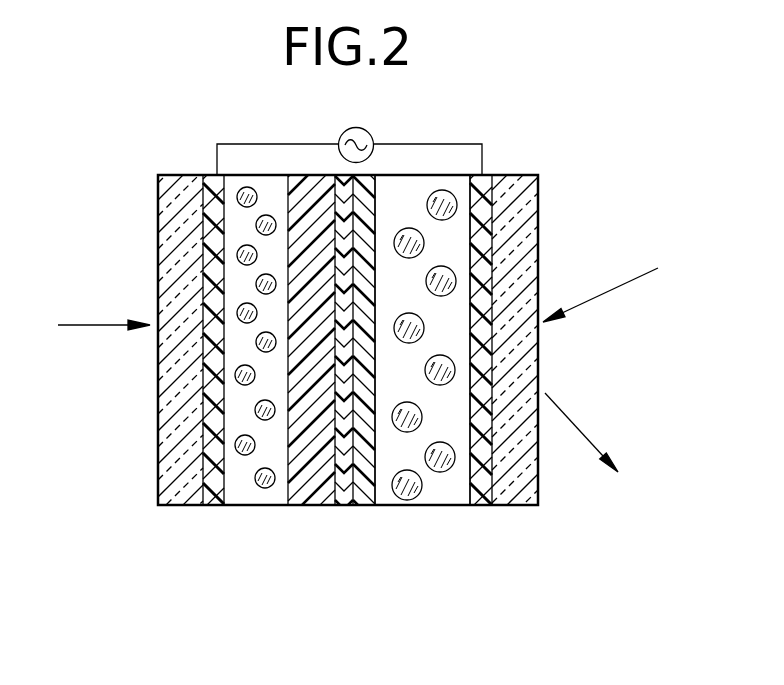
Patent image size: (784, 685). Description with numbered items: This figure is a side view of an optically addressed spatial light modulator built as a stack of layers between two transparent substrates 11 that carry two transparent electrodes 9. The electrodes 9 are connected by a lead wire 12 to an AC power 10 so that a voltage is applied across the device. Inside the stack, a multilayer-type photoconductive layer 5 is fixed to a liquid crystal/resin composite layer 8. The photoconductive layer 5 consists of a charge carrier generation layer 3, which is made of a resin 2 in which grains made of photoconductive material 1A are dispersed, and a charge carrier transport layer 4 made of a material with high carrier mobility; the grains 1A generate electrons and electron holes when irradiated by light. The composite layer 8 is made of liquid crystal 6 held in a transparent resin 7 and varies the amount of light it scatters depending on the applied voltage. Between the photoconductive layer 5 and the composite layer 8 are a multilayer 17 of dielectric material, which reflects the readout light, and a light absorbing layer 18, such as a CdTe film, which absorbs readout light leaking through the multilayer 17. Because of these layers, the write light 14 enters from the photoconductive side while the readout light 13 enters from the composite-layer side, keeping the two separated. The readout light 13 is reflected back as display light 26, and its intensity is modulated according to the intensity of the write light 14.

The grains made of photoconductive material 1A is at (270, 490).
The resin 2 is at (240, 488).
The charge carrier generation layer 3 is at (252, 395).
The charge carrier transport layer 4 is at (310, 493).
The multilayer-type photoconductive layer 5 is at (271, 397).
The liquid crystal 6 is at (413, 493).
The transparent resin 7 is at (442, 490).
The liquid crystal/resin composite layer 8 is at (429, 400).
The transparent electrode 9 is at (213, 233).
The AC power 10 is at (372, 134).
The transparent substrate 11 is at (183, 185).
The lead wire 12 is at (262, 144).
The readout light 13 is at (597, 297).
The write light 14 is at (90, 325).
The multilayer of dielectric material 17 is at (368, 510).
The light absorbing layer 18 is at (343, 507).
The display light 26 is at (575, 423).